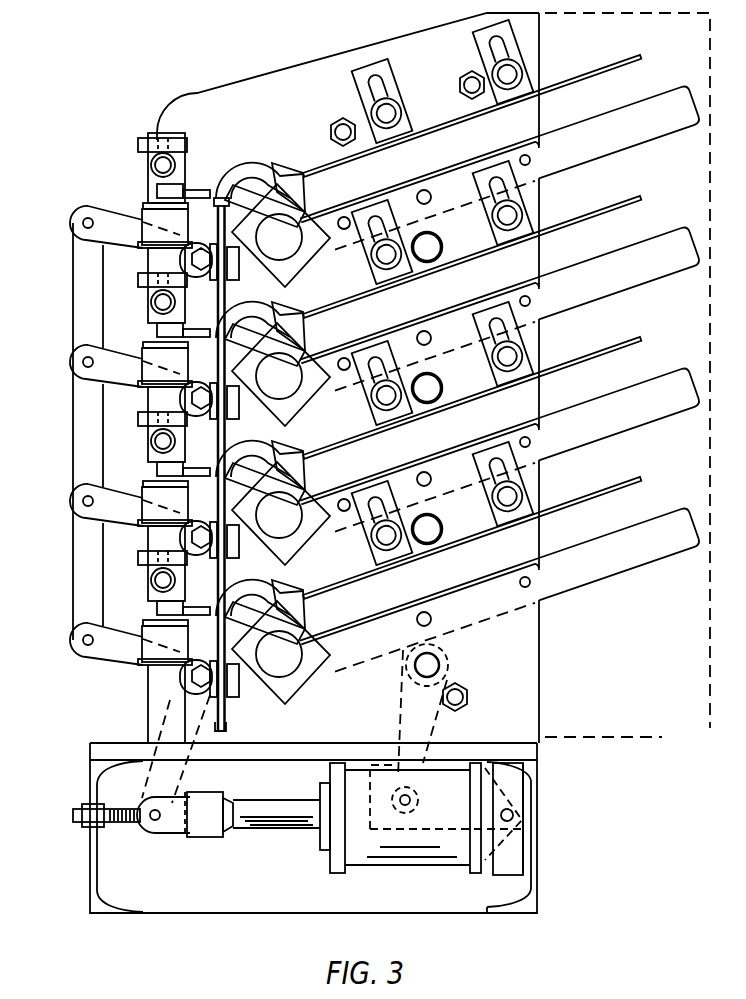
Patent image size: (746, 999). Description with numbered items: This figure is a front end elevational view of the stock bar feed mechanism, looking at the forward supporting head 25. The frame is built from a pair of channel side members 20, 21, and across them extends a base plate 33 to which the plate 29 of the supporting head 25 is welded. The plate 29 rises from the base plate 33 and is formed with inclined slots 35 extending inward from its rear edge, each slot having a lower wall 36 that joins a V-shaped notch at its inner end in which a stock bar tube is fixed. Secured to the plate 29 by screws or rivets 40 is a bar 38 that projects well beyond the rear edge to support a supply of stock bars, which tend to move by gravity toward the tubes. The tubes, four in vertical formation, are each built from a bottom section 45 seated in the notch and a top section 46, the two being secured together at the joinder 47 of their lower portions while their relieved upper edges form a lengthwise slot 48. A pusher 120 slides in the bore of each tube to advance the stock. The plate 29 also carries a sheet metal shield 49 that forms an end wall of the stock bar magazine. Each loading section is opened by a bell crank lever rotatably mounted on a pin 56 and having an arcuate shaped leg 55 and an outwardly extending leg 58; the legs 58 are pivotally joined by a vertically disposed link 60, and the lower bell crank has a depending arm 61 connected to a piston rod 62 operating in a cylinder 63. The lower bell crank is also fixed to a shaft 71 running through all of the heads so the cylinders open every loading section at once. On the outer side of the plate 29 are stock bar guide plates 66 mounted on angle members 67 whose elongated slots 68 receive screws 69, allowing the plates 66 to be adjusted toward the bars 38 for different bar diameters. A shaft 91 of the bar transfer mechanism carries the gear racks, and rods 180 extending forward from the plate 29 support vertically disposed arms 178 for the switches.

The channel side member 20 is at (92, 861).
The channel side member 21 is at (537, 883).
The supporting head 25 is at (252, 60).
The plate 29 is at (348, 378).
The base plate 33 is at (305, 751).
The slot 35 is at (419, 404).
The lower wall 36 is at (452, 399).
The bar 38 is at (619, 343).
The screws or rivets 40 is at (454, 371).
The bottom section 45 is at (285, 460).
The top section 46 is at (291, 438).
The joinder 47 is at (305, 461).
The slot 48 is at (300, 396).
The sheet metal shield 49 is at (640, 738).
The arcuate shaped leg 55 is at (266, 377).
The pin 56 is at (208, 514).
The outwardly extending leg 58 is at (106, 445).
The link 60 is at (67, 431).
The depending arm 61 is at (173, 778).
The piston rod 62 is at (243, 808).
The cylinder 63 is at (362, 853).
The stock bar guide plate 66 is at (472, 319).
The angle member 67 is at (460, 273).
The elongated slot 68 is at (384, 306).
The screw 69 is at (411, 307).
The shaft 71 is at (180, 683).
The shaft 91 is at (440, 665).
The pusher 120 is at (279, 654).
The arm 178 is at (148, 187).
The rod 180 is at (140, 165).